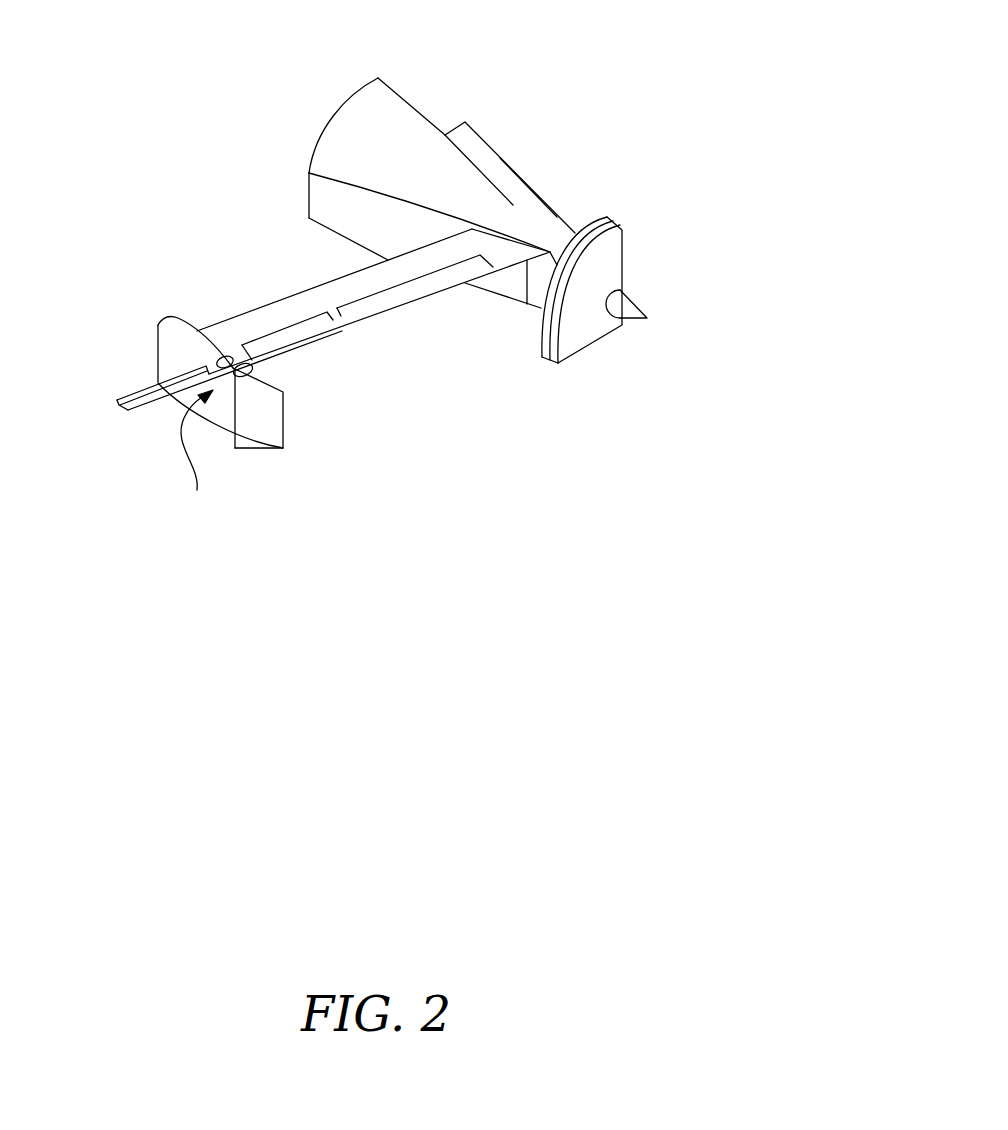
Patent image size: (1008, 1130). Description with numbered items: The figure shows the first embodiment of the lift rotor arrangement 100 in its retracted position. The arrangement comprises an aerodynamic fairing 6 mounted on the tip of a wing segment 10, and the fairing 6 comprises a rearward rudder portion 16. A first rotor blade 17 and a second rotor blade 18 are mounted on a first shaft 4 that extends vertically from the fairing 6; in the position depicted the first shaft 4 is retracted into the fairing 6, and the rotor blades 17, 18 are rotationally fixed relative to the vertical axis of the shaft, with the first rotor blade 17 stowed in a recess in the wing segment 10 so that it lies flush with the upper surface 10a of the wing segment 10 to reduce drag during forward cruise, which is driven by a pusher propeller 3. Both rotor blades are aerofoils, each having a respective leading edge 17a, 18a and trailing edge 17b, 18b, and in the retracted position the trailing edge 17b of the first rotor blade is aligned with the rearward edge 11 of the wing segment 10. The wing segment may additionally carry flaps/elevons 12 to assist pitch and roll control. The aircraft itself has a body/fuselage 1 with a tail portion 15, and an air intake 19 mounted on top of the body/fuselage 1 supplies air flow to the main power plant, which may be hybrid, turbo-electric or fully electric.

The lift rotor arrangement 100 is at (152, 219).
The aircraft body/fuselage 1 is at (408, 122).
The air intake 19 is at (465, 135).
The tail portion 15 is at (532, 190).
The pusher propeller 3 is at (610, 265).
The wing segment 10 is at (307, 285).
The upper surface 10a is at (366, 285).
The rearward edge 11 is at (330, 325).
The flaps/elevons 12 is at (430, 287).
The first rotor blade 17 is at (293, 333).
The leading edge 17a is at (241, 358).
The trailing edge 17b is at (258, 373).
The first shaft 4 is at (223, 356).
The second rotor blade 18 is at (130, 397).
The leading edge 18a is at (144, 402).
The trailing edge 18b is at (131, 392).
The aerodynamic fairing 6 is at (197, 457).
The rearward rudder portion 16 is at (259, 422).